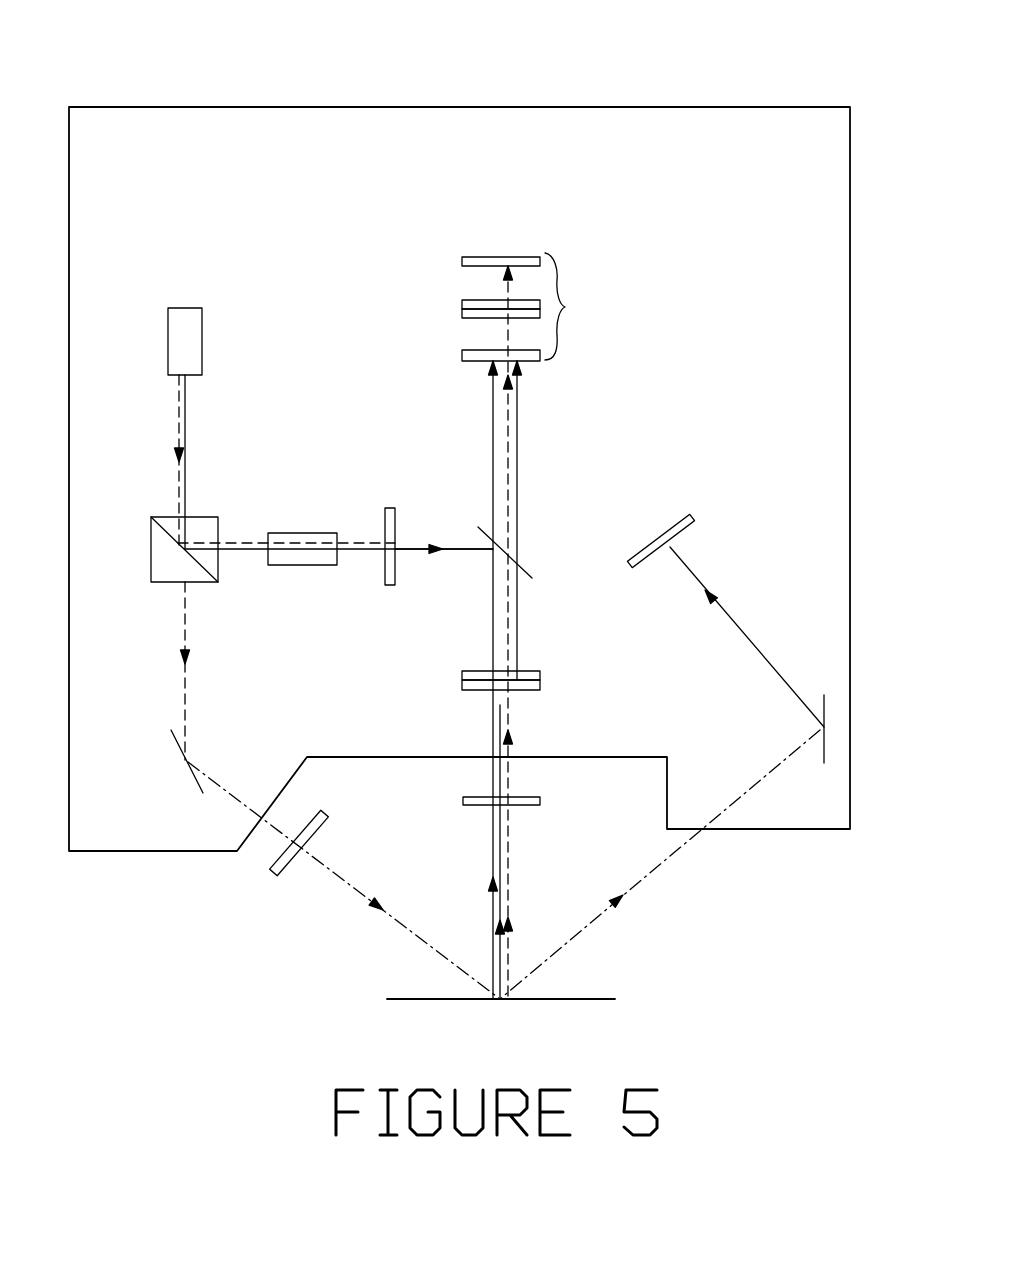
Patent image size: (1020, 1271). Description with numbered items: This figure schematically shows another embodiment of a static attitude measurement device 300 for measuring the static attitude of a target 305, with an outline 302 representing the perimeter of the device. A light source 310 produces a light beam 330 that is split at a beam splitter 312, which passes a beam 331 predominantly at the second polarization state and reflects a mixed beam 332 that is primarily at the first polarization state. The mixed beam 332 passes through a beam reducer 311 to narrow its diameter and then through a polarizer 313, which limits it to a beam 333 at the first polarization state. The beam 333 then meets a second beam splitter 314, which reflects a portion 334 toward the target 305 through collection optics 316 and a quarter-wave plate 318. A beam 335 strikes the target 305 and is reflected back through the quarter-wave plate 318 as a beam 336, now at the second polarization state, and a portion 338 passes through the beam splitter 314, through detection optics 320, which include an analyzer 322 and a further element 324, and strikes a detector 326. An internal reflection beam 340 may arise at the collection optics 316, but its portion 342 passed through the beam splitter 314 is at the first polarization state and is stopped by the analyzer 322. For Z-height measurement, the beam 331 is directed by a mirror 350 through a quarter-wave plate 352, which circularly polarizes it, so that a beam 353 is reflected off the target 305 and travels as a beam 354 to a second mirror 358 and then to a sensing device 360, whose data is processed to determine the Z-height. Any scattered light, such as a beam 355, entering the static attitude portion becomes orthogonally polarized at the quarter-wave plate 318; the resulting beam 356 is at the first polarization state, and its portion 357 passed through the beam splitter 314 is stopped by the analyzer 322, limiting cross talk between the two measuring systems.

The static attitude measurement device 300 is at (503, 90).
The outline 302 is at (850, 335).
The target 305 is at (580, 1000).
The light source 310 is at (202, 336).
The beam reducer 311 is at (312, 534).
The beam splitter 312 is at (150, 552).
The polarizer 313 is at (392, 508).
The beam splitter 314 is at (526, 570).
The collection optics 316 is at (540, 675).
The quarter-wave plate 318 is at (540, 800).
The detection optics 320 is at (565, 307).
The analyzer 322 is at (462, 355).
The optical element 324 is at (462, 310).
The detector 326 is at (497, 257).
The light beam 330 is at (186, 398).
The beam 331 is at (180, 613).
The beam 332 is at (245, 549).
The beam 333 is at (420, 552).
The portion 334 is at (500, 710).
The beam 335 is at (510, 877).
The beam 336 is at (511, 637).
The portion 338 is at (510, 448).
The internal reflection beam 340 is at (518, 613).
The portion 342 is at (518, 410).
The mirror 350 is at (172, 737).
The quarter-wave plate 352 is at (320, 810).
The beam 353 is at (326, 868).
The beam 354 is at (630, 888).
The beam 355 is at (490, 905).
The beam 356 is at (493, 645).
The portion 357 is at (493, 425).
The second mirror 358 is at (824, 700).
The sensing device 360 is at (667, 530).